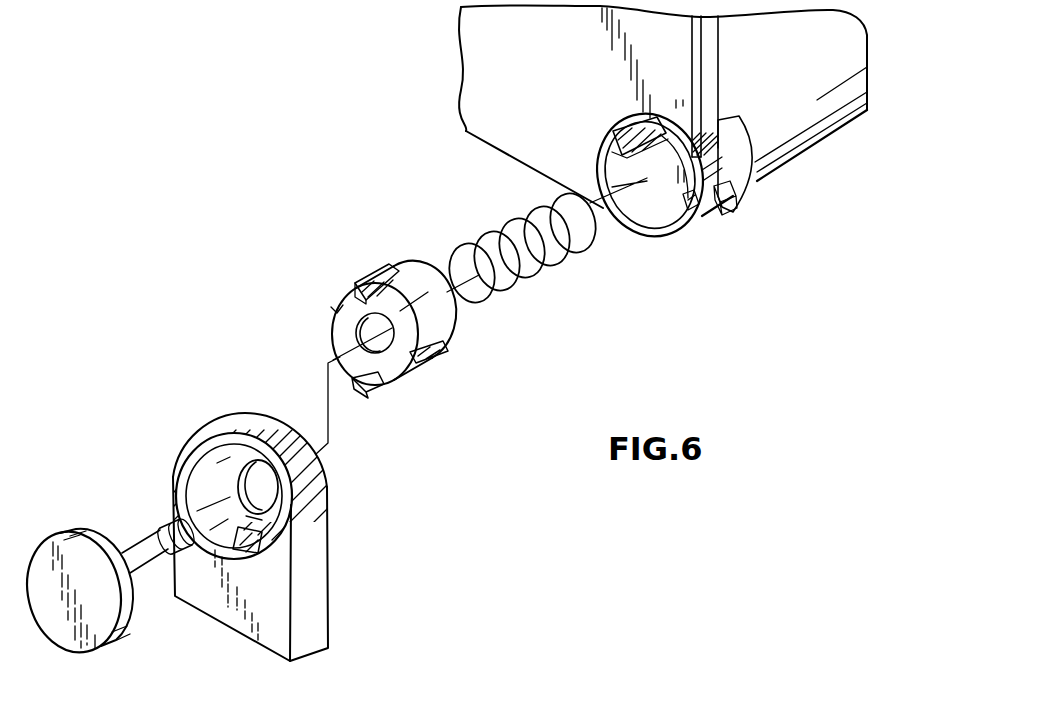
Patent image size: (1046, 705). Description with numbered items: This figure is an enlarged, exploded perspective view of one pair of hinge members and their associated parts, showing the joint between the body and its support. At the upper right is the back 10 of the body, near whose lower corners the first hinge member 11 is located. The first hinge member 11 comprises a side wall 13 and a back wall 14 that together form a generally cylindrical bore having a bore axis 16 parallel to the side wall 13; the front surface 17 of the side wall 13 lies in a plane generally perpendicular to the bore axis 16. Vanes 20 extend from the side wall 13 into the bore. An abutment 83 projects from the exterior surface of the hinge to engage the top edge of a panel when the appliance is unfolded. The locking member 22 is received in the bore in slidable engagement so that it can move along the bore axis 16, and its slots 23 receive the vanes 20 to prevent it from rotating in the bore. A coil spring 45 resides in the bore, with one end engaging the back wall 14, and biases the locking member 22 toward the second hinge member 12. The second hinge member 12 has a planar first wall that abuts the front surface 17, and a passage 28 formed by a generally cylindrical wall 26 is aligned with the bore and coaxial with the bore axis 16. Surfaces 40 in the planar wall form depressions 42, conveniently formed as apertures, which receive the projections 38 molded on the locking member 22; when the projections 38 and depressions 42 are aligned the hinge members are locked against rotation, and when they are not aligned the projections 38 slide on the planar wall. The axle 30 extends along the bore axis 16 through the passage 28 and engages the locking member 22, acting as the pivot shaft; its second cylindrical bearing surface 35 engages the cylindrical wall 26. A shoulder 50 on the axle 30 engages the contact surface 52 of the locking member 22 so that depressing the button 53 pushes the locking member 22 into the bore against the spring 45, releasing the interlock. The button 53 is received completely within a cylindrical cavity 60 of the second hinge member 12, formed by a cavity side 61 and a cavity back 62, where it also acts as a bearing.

The back 10 is at (850, 50).
The first hinge member 11 is at (698, 228).
The second hinge member 12 is at (324, 527).
The side wall 13 is at (660, 220).
The back wall 14 is at (688, 145).
The bore axis 16 is at (601, 222).
The front surface 17 is at (633, 224).
The vanes 20 is at (611, 151).
The locking member 22 is at (372, 270).
The slots 23 is at (336, 312).
The cylindrical wall 26 is at (258, 518).
The passage 28 is at (278, 489).
The axle 30 is at (152, 584).
The second cylindrical bearing surface 35 is at (360, 332).
The projections 38 is at (372, 392).
The surfaces 40 is at (212, 534).
The depressions 42 is at (252, 548).
The spring 45 is at (530, 280).
The shoulder 50 is at (124, 552).
The contact surface 52 is at (393, 304).
The button 53 is at (70, 532).
The cylindrical cavity 60 is at (215, 547).
The cavity side 61 is at (190, 470).
The cavity back 62 is at (215, 470).
The abutments 83 is at (735, 203).